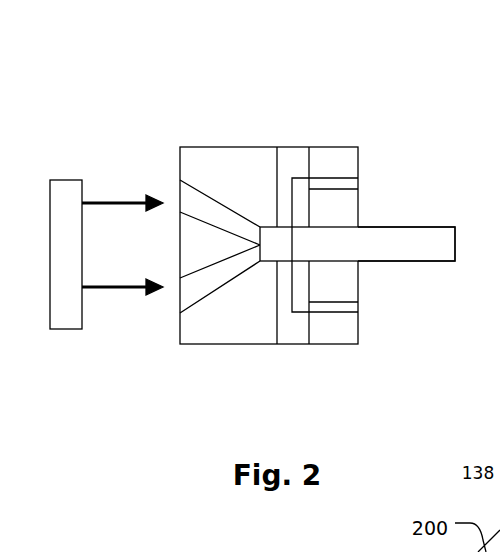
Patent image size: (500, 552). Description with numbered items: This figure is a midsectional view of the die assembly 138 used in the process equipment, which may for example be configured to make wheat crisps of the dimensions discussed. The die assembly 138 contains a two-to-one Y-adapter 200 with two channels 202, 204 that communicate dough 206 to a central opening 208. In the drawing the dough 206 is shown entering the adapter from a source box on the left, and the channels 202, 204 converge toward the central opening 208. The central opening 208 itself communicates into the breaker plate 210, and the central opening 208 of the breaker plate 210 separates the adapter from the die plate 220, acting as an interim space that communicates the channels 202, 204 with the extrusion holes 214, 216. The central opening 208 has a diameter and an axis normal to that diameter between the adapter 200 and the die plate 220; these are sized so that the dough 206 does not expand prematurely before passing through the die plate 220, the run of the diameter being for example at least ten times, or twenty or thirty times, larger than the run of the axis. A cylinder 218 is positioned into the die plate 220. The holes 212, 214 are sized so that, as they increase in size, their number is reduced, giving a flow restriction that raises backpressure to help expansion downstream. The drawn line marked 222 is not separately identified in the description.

The die assembly 138 is at (352, 69).
The Y-adapter 200 is at (198, 147).
The channel 202 is at (180, 180).
The channel 204 is at (180, 313).
The dough 206 is at (65, 180).
The central opening 208 is at (277, 245).
The breaker plate 210 is at (292, 345).
The hole 212 is at (301, 200).
The extrusion hole 214 is at (359, 183).
The extrusion hole 216 is at (359, 306).
The cylinder 218 is at (407, 245).
The die plate 220 is at (359, 148).
The passage 222 is at (308, 245).